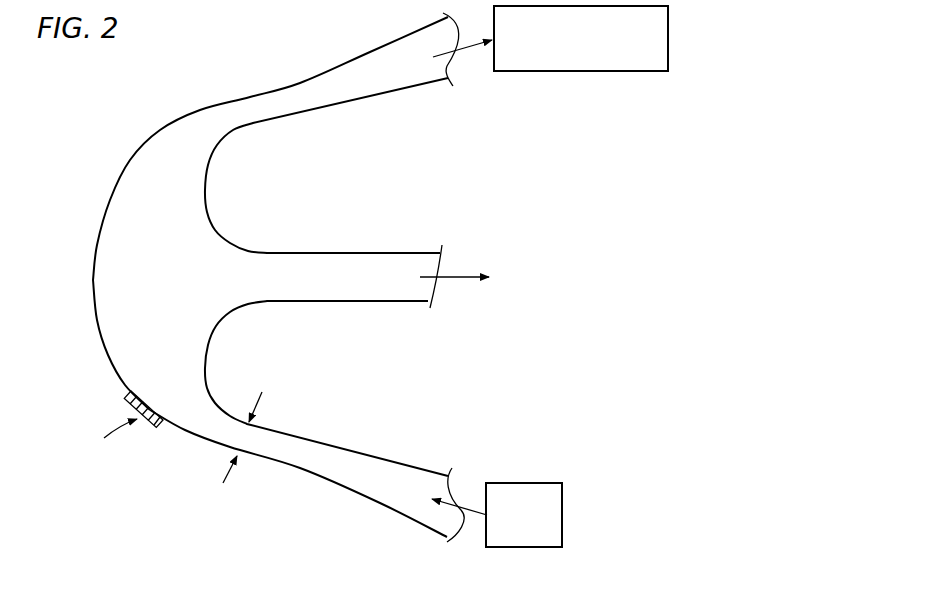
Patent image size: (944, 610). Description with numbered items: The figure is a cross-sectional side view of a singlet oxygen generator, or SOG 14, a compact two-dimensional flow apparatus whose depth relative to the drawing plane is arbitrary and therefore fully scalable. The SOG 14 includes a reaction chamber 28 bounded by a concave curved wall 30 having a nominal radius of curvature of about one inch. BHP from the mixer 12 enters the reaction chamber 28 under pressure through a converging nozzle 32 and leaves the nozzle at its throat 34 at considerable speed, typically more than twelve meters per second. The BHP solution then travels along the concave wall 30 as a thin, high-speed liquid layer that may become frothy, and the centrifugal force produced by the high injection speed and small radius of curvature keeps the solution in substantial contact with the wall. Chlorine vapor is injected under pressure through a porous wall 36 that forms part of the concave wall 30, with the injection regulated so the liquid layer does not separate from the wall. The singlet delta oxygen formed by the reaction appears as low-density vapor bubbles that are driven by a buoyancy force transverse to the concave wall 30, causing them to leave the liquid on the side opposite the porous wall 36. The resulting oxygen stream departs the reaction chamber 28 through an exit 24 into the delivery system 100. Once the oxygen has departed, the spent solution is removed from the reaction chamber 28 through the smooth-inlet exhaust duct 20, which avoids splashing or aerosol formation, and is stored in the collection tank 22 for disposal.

The mixer 12 is at (515, 484).
The SOG 14 is at (96, 362).
The exhaust duct 20 is at (368, 62).
The collection tank 22 is at (588, 71).
The exit 24 is at (255, 273).
The reaction chamber 28 is at (106, 283).
The concave curved wall 30 is at (106, 213).
The converging nozzle 32 is at (387, 467).
The throat 34 is at (245, 432).
The porous wall 36 is at (160, 420).
The delivery system 100 is at (396, 255).